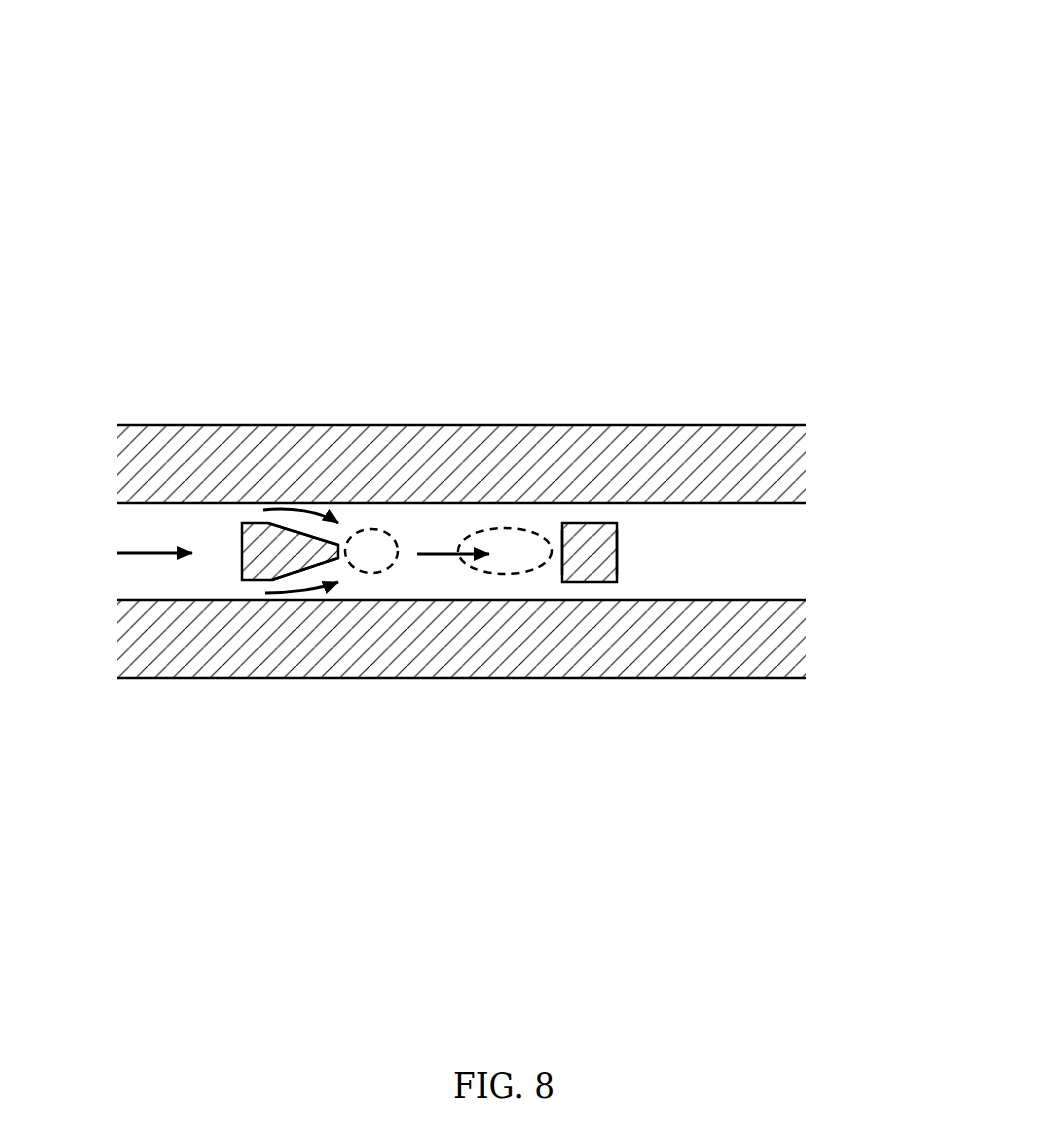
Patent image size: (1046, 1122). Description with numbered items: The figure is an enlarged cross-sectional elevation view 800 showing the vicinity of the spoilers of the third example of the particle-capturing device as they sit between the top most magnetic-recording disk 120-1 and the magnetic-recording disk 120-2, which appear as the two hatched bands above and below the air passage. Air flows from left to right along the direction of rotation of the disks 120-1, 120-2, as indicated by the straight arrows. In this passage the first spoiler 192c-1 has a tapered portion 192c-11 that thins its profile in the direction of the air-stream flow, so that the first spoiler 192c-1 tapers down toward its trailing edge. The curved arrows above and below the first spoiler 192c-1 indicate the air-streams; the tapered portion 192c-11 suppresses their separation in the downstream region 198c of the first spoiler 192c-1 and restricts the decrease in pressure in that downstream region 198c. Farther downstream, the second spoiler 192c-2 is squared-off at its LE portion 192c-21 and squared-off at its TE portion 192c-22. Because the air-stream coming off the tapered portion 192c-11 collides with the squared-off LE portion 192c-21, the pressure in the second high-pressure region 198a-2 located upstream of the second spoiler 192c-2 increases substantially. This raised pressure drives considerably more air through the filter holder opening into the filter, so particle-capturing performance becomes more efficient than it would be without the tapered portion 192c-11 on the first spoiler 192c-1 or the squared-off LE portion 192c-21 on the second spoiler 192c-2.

The enlarged cross-sectional elevation view 800 is at (130, 85).
The top most magnetic-recording disk 120-1 is at (745, 475).
The magnetic-recording disk 120-2 is at (745, 648).
The first spoiler 192c-1 is at (253, 542).
The tapered portion 192c-11 is at (318, 533).
The downstream region 198c is at (372, 528).
The second high-pressure region 198a-2 is at (506, 528).
The second spoiler 192c-2 is at (585, 538).
The squared-off LE portion 192c-21 is at (550, 556).
The squared-off TE portion 192c-22 is at (617, 557).